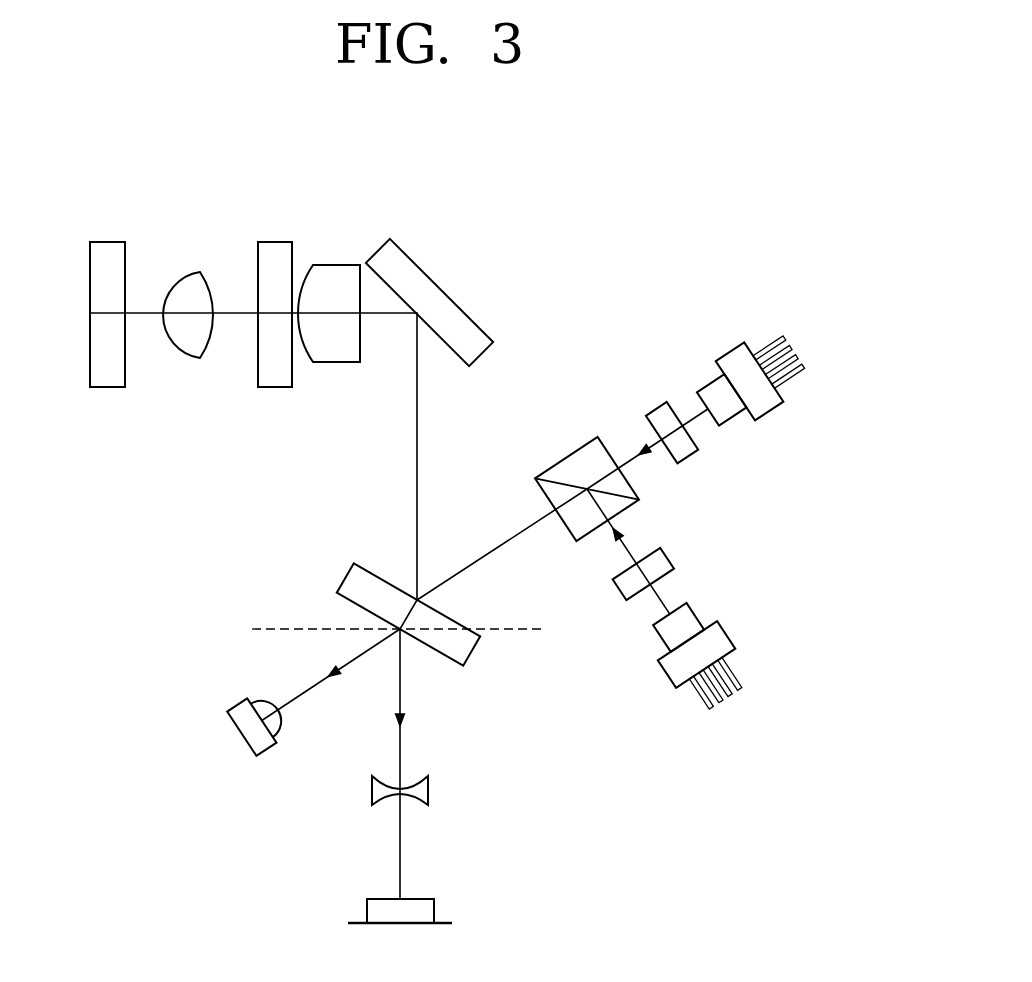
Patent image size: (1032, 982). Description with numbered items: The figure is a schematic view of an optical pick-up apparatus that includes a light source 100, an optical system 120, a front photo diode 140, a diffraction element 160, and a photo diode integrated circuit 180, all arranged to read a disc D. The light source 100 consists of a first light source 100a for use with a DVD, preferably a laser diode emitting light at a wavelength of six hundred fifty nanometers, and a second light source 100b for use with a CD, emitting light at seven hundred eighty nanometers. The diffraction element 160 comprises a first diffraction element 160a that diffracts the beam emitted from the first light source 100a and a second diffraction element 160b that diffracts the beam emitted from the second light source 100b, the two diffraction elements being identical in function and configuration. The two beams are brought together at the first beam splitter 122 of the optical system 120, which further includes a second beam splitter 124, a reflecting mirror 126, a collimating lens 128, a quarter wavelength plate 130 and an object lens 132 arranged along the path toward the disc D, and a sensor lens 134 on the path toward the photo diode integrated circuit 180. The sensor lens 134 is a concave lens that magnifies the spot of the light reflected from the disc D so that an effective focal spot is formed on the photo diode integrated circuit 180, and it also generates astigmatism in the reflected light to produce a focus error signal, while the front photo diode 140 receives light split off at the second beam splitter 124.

The disc D is at (97, 283).
The light source 100 is at (872, 448).
The first light source 100a is at (720, 623).
The second light source 100b is at (770, 405).
The optical system 120 is at (607, 179).
The first beam splitter 122 is at (583, 460).
The second beam splitter 124 is at (380, 576).
The reflecting mirror 126 is at (409, 269).
The collimating lens 128 is at (332, 272).
The quarter wavelength plate 130 is at (272, 249).
The object lens 132 is at (191, 283).
The sensor lens 134 is at (420, 783).
The front photo diode 140 is at (243, 725).
The diffraction element 160 is at (769, 458).
The first diffraction element 160a is at (662, 548).
The second diffraction element 160b is at (687, 458).
The photo diode integrated circuit 180 is at (420, 910).